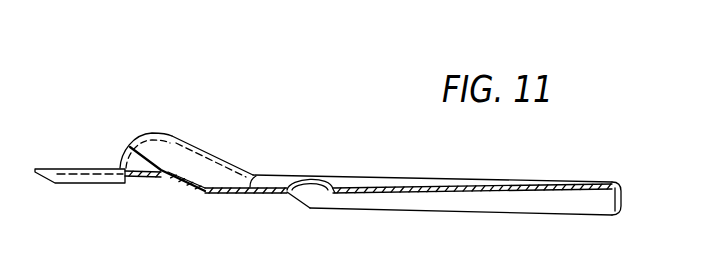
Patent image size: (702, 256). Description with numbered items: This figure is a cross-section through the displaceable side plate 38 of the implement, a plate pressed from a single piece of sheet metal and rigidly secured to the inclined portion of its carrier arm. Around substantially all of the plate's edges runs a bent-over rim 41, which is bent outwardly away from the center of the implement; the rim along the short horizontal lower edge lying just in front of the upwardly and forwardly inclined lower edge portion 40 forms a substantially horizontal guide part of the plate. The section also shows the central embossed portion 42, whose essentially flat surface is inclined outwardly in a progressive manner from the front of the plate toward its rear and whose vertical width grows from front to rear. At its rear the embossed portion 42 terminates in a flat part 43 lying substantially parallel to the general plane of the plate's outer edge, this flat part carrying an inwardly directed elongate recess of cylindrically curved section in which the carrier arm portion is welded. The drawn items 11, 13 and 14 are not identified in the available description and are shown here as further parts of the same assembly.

The end tab 11 is at (69, 180).
The arched bend 14 is at (168, 137).
The inclined portion 13 is at (250, 189).
The flat part 43 is at (246, 184).
The side plate 38 is at (343, 175).
The lower edge portion 40 is at (300, 205).
The bent-over rim 41 is at (408, 204).
The embossed portion 42 is at (545, 160).